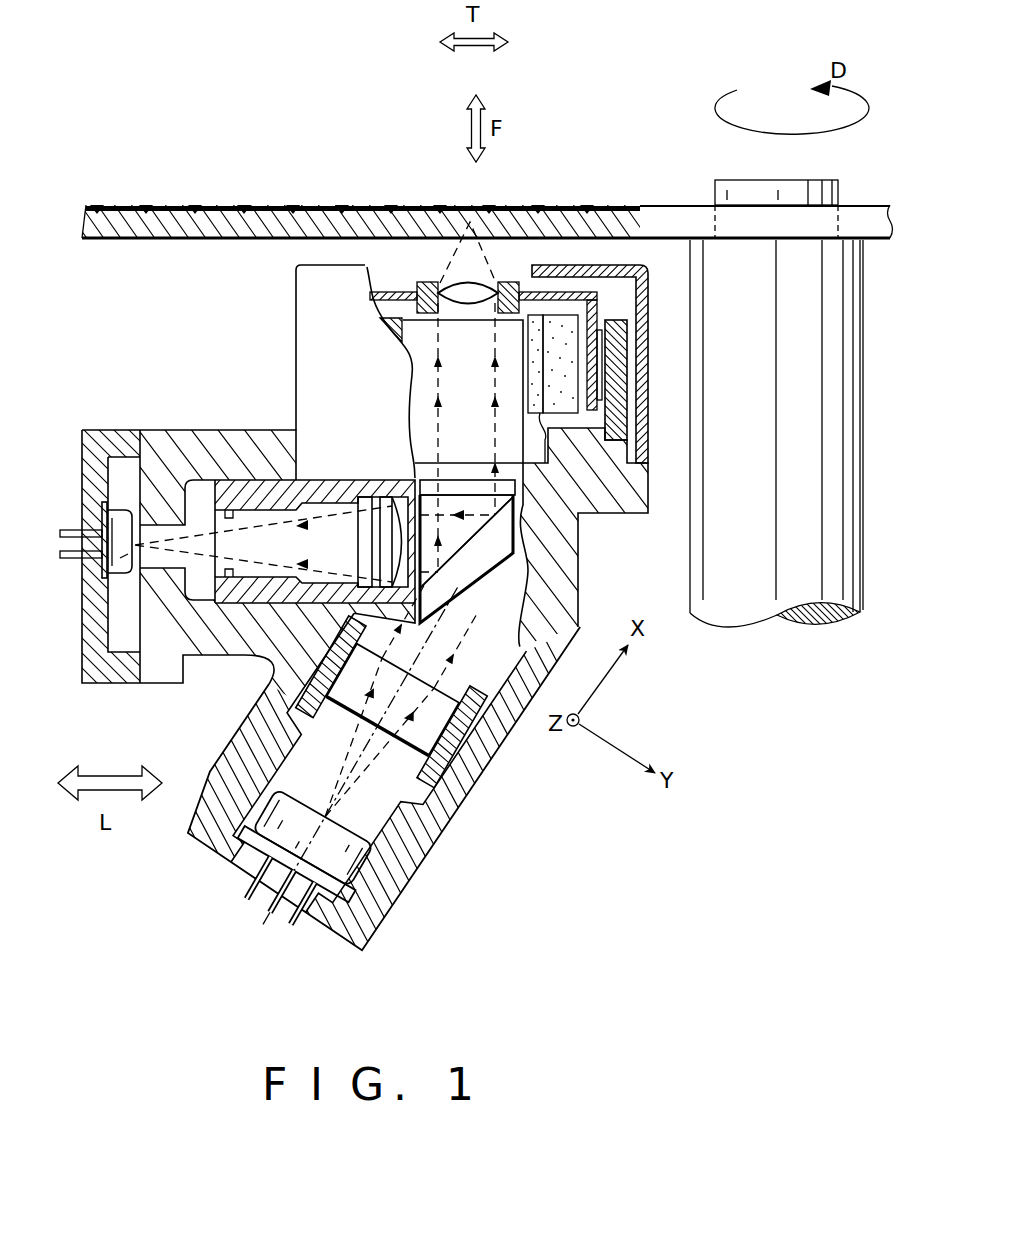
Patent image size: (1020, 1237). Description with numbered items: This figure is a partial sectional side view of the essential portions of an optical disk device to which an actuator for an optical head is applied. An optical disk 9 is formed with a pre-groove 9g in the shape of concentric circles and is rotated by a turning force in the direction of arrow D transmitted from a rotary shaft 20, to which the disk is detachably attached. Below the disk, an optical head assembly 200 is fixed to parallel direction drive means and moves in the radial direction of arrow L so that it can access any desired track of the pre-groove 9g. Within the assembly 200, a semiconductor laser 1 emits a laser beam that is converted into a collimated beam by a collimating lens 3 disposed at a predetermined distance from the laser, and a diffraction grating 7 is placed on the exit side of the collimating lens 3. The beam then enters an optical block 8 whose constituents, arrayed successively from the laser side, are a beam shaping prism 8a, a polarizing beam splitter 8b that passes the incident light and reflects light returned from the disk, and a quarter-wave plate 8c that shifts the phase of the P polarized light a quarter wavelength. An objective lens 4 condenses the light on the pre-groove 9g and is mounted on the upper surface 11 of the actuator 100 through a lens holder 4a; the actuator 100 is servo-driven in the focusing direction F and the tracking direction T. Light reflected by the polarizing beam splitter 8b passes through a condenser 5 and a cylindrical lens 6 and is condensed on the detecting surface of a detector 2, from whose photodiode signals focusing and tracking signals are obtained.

The semiconductor laser 1 is at (320, 912).
The detector 2 is at (120, 505).
The collimating lens 3 is at (476, 790).
The objective lens 4 is at (465, 292).
The lens holder 4a is at (504, 292).
The condenser 5 is at (385, 495).
The cylindrical lens 6 is at (362, 494).
The diffraction grating 7 is at (503, 740).
The optical block 8 is at (531, 532).
The beam shaping prism 8a is at (457, 582).
The polarizing beam splitter 8b is at (470, 530).
The quarter-wave plate 8c is at (462, 480).
The optical disk 9 is at (368, 207).
The pre-groove 9g is at (520, 207).
The upper surface 11 is at (600, 263).
The rotary shaft 20 is at (733, 622).
The actuator 100 is at (607, 307).
The optical head assembly 200 is at (470, 823).